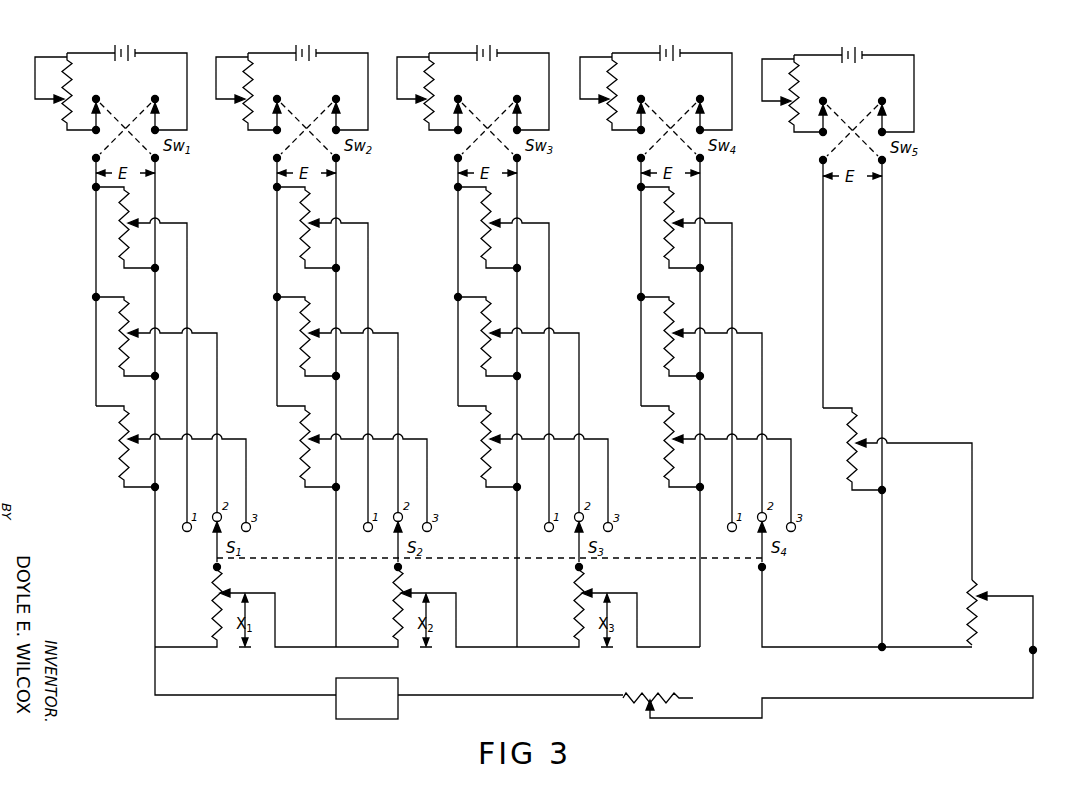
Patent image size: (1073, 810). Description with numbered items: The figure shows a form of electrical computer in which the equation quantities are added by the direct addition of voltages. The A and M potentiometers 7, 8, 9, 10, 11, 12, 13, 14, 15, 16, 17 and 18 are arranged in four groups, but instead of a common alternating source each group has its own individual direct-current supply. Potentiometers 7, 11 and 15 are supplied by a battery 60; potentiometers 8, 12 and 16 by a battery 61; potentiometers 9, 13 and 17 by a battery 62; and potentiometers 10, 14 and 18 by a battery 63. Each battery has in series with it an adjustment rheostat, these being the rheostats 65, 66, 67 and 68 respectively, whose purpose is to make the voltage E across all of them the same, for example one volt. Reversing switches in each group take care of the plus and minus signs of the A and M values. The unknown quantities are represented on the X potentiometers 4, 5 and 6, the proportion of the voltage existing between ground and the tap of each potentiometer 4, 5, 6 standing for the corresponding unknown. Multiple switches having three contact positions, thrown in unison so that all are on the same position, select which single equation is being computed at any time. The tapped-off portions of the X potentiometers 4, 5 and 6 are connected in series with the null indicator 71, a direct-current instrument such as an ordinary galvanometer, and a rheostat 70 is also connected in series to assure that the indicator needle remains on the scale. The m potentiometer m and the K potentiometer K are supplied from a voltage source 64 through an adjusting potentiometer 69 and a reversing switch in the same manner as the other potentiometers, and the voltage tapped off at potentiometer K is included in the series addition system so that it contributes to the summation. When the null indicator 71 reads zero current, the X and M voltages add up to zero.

The battery 60 is at (142, 44).
The battery 61 is at (323, 44).
The battery 62 is at (504, 44).
The battery 63 is at (687, 44).
The voltage source 64 is at (875, 46).
The adjustment rheostat 65 is at (76, 89).
The adjustment rheostat 66 is at (257, 89).
The adjustment rheostat 67 is at (438, 89).
The adjustment rheostat 68 is at (621, 89).
The adjusting potentiometer 69 is at (803, 91).
The potentiometer 7 is at (133, 212).
The potentiometer 8 is at (314, 212).
The potentiometer 9 is at (495, 212).
The potentiometer 10 is at (678, 214).
The potentiometer 11 is at (133, 322).
The potentiometer 12 is at (314, 322).
The potentiometer 13 is at (495, 322).
The potentiometer 14 is at (678, 322).
The potentiometer 15 is at (133, 428).
The potentiometer 16 is at (314, 428).
The potentiometer 17 is at (495, 428).
The potentiometer 18 is at (678, 428).
The potentiometer 4 is at (225, 590).
The potentiometer 5 is at (406, 590).
The potentiometer 6 is at (587, 590).
The rheostat 70 is at (655, 692).
The null indicator 71 is at (402, 712).
The potentiometer m is at (863, 432).
The potentiometer K is at (990, 595).